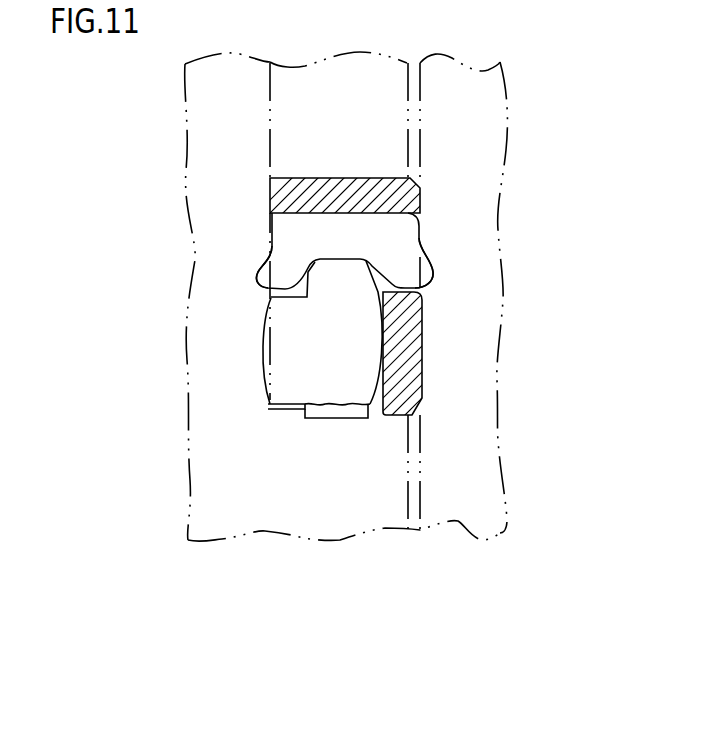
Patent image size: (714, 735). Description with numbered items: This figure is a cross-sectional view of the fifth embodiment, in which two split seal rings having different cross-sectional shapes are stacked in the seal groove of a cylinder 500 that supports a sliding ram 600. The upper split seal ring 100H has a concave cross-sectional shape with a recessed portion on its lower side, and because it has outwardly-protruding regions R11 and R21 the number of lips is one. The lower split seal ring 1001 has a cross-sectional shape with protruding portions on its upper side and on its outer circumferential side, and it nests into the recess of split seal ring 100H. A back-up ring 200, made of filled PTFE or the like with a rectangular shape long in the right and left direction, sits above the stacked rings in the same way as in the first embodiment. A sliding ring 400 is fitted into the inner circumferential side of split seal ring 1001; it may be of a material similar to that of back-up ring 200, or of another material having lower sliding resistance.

The back-up ring 200 is at (420, 203).
The split seal ring 100H is at (398, 240).
The outwardly-protruding region R21 is at (257, 278).
The outwardly-protruding region R11 is at (437, 277).
The split seal ring 1001 is at (297, 354).
The sliding ring 400 is at (405, 354).
The cylinder 500 is at (313, 497).
The sliding ram 600 is at (460, 497).